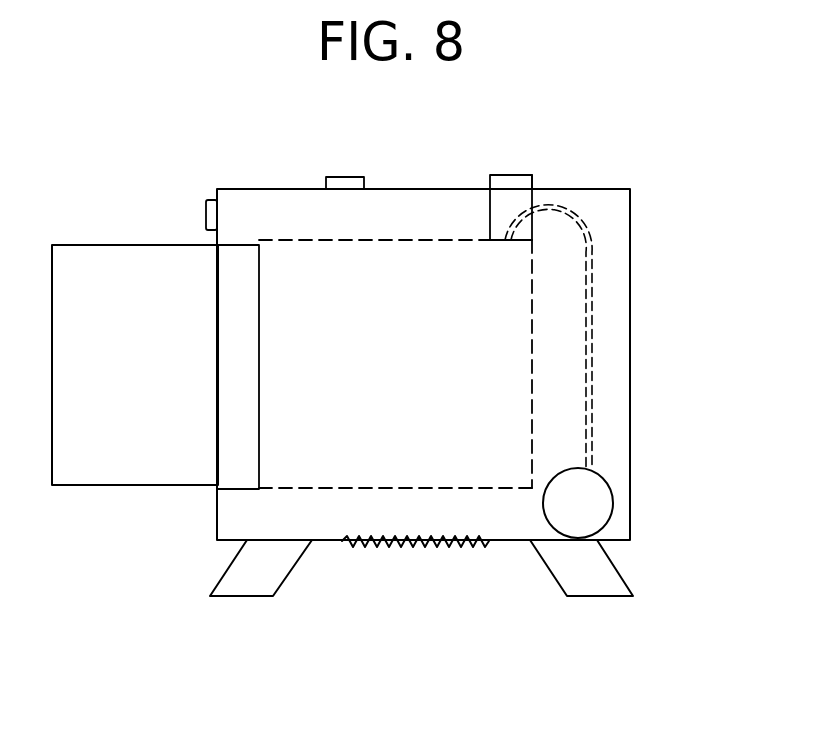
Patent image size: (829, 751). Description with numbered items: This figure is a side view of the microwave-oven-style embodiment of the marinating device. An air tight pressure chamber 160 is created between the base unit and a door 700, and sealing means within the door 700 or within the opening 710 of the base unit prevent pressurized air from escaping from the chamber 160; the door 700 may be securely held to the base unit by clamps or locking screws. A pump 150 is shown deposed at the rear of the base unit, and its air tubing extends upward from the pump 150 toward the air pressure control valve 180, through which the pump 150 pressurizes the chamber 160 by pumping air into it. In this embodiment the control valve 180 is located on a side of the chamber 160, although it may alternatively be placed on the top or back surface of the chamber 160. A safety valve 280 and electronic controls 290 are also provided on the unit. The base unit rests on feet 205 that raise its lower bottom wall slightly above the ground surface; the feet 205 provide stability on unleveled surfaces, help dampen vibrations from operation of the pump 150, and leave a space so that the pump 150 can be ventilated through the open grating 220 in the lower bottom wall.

The pump assembly 150 is at (612, 490).
The pressure chamber 160 is at (478, 373).
The air pressure control valve 180 is at (510, 175).
The feet 205 is at (292, 572).
The open grating 220 is at (453, 543).
The safety valve 280 is at (340, 177).
The electronic controls 290 is at (206, 213).
The door 700 is at (103, 486).
The opening 710 is at (258, 471).